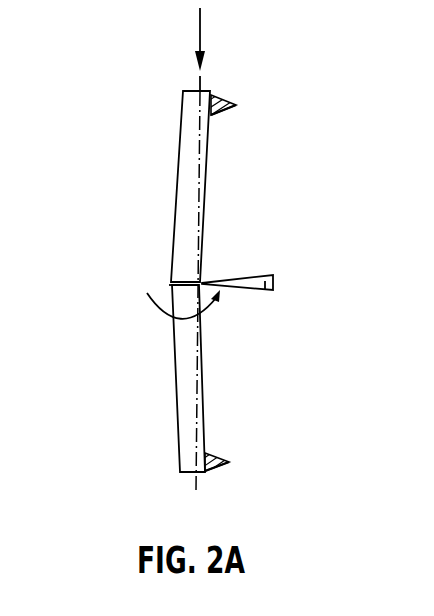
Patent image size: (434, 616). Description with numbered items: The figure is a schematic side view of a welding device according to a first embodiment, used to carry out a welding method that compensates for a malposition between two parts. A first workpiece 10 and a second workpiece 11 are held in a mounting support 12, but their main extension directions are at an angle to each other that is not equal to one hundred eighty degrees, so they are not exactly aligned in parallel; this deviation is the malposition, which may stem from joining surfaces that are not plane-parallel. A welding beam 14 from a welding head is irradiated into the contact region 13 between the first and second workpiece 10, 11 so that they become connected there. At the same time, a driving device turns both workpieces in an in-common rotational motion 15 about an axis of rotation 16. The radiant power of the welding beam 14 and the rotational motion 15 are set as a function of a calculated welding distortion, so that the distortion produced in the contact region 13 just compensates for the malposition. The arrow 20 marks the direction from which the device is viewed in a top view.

The first workpiece 10 is at (188, 190).
The second workpiece 11 is at (188, 380).
The mounting support 12 is at (219, 108).
The contact region 13 is at (222, 264).
The welding beam 14 is at (262, 282).
The rotational motion 15 is at (207, 314).
The axis of rotation 16 is at (198, 83).
The arrow 20 is at (205, 27).